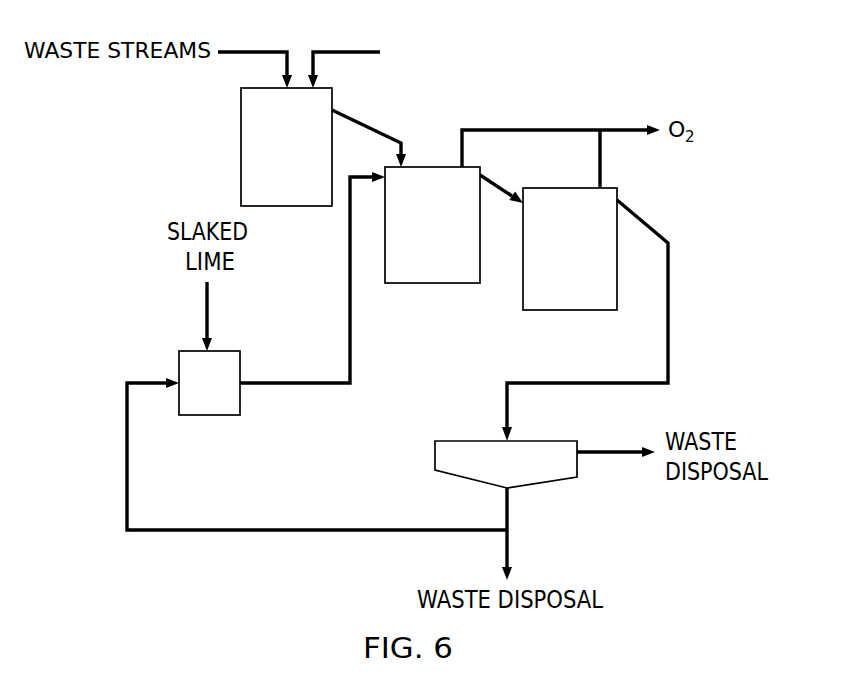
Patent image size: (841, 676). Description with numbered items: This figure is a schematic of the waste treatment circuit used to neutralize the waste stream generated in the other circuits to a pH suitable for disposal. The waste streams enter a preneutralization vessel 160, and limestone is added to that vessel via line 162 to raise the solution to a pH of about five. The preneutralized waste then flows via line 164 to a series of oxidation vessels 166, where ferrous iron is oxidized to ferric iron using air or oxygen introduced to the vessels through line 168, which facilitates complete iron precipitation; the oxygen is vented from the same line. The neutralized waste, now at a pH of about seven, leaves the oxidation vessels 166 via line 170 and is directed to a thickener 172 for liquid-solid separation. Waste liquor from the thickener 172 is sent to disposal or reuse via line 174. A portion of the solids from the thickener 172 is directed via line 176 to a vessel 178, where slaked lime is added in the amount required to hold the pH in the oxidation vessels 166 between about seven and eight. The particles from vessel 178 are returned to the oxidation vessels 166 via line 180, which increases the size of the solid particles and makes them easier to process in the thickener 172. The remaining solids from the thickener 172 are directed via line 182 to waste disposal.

The preneutralization vessel 160 is at (286, 147).
The line 162 is at (348, 50).
The line 164 is at (367, 125).
The oxidation vessels 166 is at (501, 238).
The line 168 is at (618, 130).
The line 170 is at (675, 300).
The thickener 172 is at (506, 464).
The line 174 is at (603, 457).
The line 176 is at (280, 528).
The vessel 178 is at (209, 348).
The line 180 is at (353, 323).
The line 182 is at (508, 550).